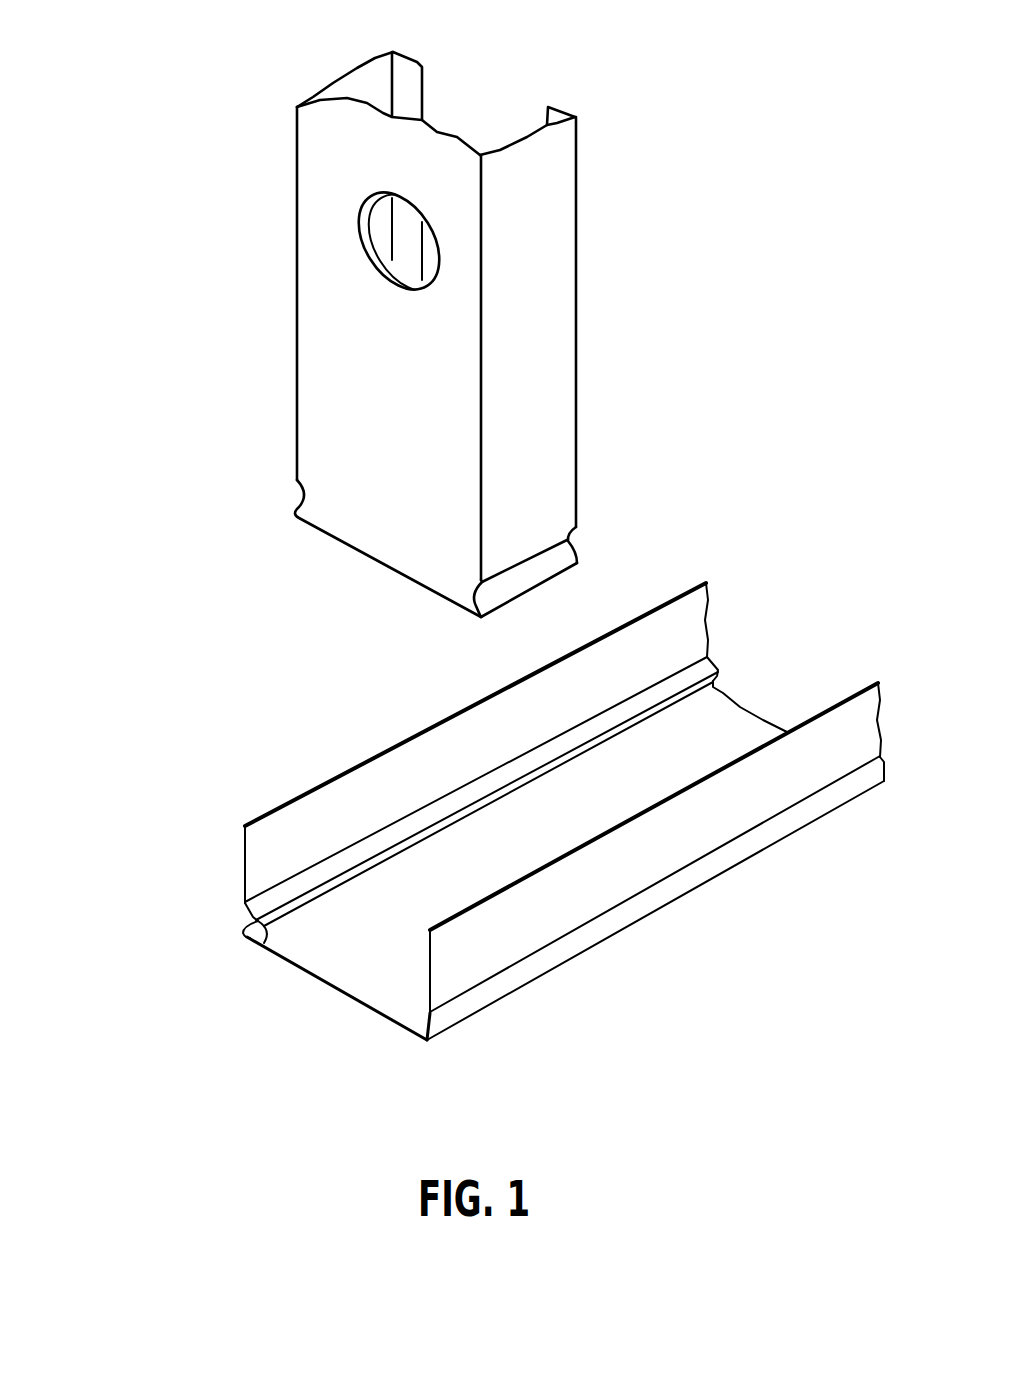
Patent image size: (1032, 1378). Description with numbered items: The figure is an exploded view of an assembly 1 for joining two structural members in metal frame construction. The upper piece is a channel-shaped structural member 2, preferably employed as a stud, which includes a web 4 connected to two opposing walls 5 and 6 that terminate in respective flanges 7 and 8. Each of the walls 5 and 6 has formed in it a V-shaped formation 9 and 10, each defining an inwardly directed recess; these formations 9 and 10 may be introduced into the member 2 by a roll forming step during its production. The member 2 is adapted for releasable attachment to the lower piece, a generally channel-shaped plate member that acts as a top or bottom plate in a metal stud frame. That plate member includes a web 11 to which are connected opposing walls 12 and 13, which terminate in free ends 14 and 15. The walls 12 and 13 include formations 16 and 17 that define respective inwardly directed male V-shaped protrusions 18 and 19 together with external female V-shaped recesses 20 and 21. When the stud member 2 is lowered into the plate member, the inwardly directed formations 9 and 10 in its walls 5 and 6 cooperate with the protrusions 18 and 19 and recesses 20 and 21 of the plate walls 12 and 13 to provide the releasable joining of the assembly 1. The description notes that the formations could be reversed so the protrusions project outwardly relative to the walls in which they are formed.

The assembly 1 is at (160, 636).
The structural member 2 is at (650, 356).
The web 4 is at (320, 297).
The wall 5 is at (353, 90).
The wall 6 is at (562, 207).
The flange 7 is at (410, 77).
The flange 8 is at (547, 119).
The V-shaped formation 9 is at (297, 490).
The V-shaped formation 10 is at (563, 558).
The web 11 is at (305, 958).
The wall 12 is at (292, 830).
The wall 13 is at (747, 793).
The free end 14 is at (362, 762).
The free end 15 is at (856, 692).
The formation 16 is at (222, 938).
The formation 17 is at (398, 1045).
The male V-shaped protrusion 18 is at (253, 953).
The male V-shaped protrusion 19 is at (390, 1020).
The female V-shaped recess 20 is at (248, 912).
The female V-shaped recess 21 is at (398, 1018).